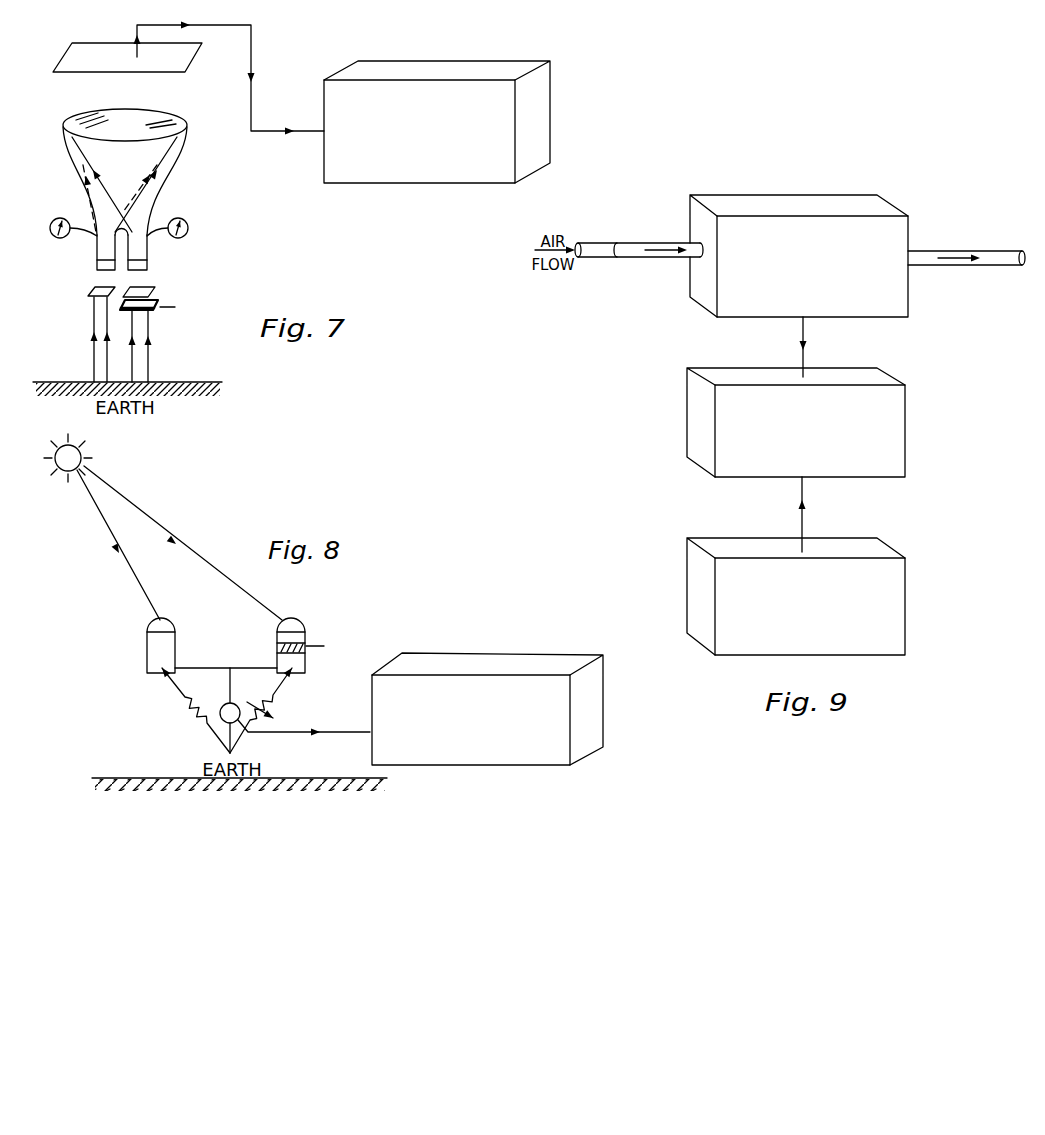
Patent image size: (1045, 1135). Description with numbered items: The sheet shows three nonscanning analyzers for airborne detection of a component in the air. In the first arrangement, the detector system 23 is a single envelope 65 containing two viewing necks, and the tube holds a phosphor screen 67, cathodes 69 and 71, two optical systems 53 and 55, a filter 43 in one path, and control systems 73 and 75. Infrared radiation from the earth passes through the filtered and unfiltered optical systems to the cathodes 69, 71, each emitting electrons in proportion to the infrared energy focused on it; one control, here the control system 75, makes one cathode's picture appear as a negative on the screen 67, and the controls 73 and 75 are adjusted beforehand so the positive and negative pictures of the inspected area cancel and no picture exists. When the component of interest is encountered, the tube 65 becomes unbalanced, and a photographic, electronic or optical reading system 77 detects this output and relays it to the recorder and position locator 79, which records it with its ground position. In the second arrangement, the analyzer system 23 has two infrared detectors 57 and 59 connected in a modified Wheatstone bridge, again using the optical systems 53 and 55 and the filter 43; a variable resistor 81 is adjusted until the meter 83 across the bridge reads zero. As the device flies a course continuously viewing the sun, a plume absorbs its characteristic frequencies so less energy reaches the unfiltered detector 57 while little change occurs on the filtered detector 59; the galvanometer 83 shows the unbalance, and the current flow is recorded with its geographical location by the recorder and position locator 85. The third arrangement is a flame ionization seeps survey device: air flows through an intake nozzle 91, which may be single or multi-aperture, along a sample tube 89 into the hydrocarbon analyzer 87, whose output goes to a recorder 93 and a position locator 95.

In FIG. 7, the detector system 23 is at (229, 192).
In FIG. 8, the detector system 23 is at (232, 654).
In FIG. 7, the filter 43 is at (155, 312).
In FIG. 8, the filter 43 is at (306, 668).
In FIG. 7, the optical system 53 is at (92, 290).
In FIG. 8, the optical system 53 is at (150, 620).
In FIG. 7, the optical system 55 is at (158, 291).
In FIG. 8, the optical system 55 is at (307, 625).
In FIG. 8, the infrared detector 57 is at (150, 673).
In FIG. 8, the infrared detector 59 is at (305, 672).
In FIG. 7, the envelope 65 is at (67, 152).
In FIG. 7, the phosphor screen 67 is at (70, 117).
In FIG. 7, the cathode 69 is at (147, 262).
In FIG. 7, the cathode 71 is at (96, 262).
In FIG. 7, the control system 73 is at (50, 230).
In FIG. 7, the control system 75 is at (188, 232).
In FIG. 7, the reading system 77 is at (68, 58).
In FIG. 7, the recorder and position locator 79 is at (440, 186).
In FIG. 8, the variable resistor 81 is at (273, 707).
In FIG. 8, the meter 83 is at (227, 703).
In FIG. 8, the recorder and position locator 85 is at (480, 653).
In FIG. 9, the analyzer 87 is at (908, 305).
In FIG. 9, the sample tube 89 is at (668, 262).
In FIG. 9, the intake nozzle 91 is at (588, 243).
In FIG. 9, the recorder 93 is at (905, 455).
In FIG. 9, the position locator 95 is at (905, 603).